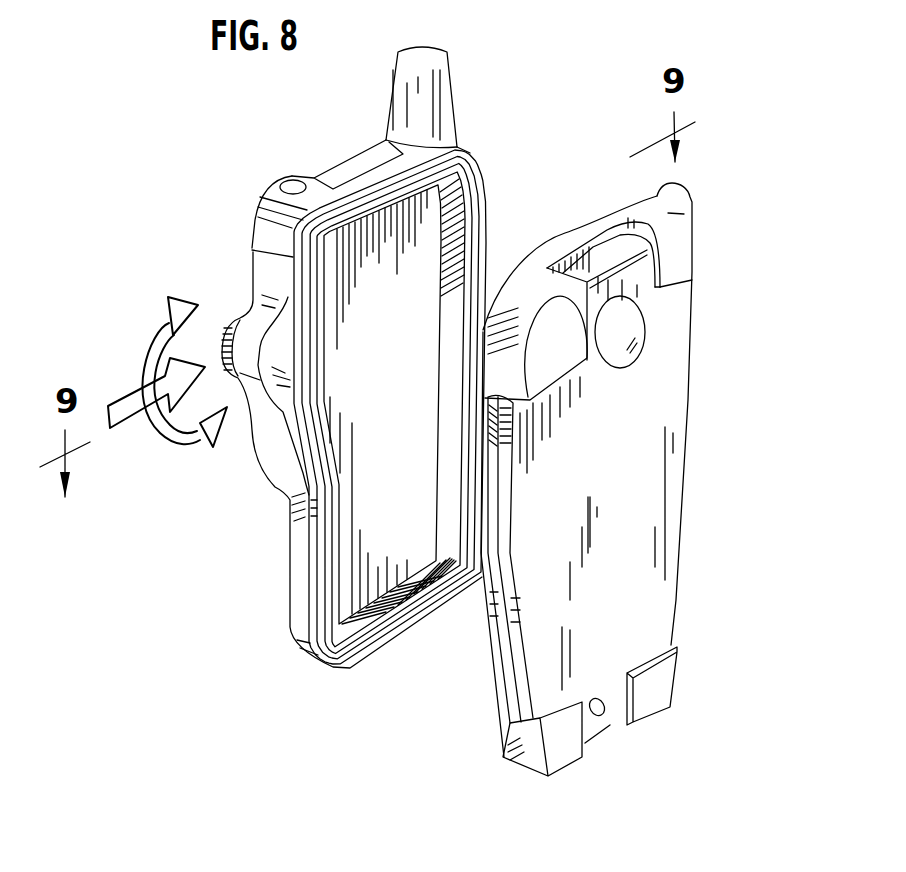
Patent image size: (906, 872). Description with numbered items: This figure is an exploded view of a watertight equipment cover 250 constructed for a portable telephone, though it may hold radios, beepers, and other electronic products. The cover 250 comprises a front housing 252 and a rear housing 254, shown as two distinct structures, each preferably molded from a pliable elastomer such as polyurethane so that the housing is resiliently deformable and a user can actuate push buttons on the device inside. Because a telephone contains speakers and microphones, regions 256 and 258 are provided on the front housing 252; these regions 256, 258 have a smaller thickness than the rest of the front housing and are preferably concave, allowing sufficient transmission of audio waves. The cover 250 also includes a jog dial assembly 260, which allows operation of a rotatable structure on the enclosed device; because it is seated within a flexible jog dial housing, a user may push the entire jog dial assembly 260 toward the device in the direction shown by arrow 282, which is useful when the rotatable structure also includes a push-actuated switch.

The watertight equipment cover 250 is at (270, 634).
The front housing 252 is at (685, 240).
The rear housing 254 is at (293, 180).
The audio transmission region 256 is at (625, 329).
The audio transmission region 258 is at (603, 718).
The jog dial assembly 260 is at (260, 393).
The arrow 282 is at (120, 398).